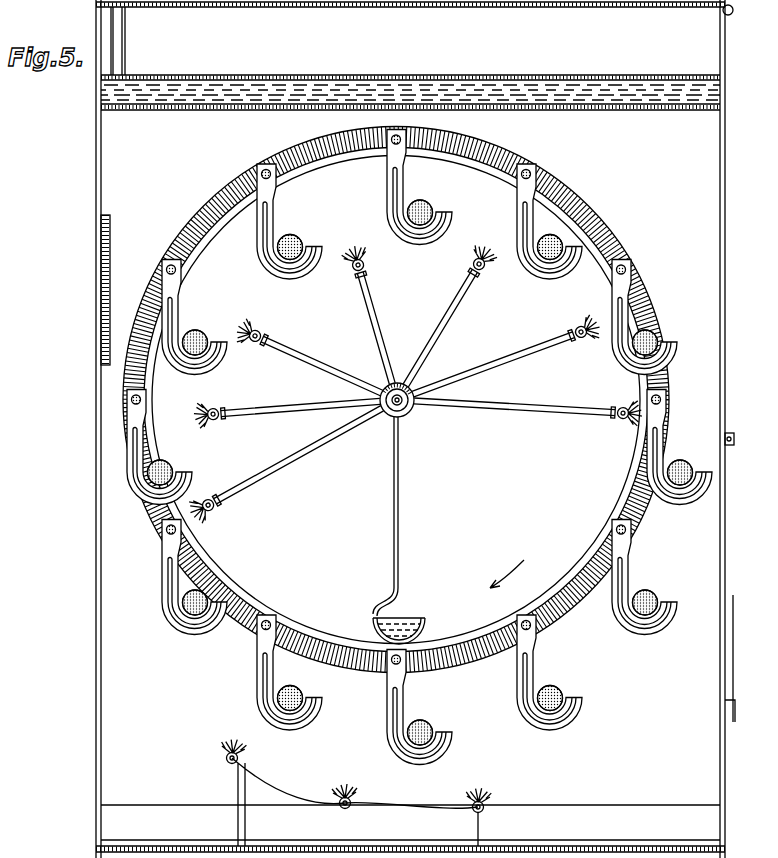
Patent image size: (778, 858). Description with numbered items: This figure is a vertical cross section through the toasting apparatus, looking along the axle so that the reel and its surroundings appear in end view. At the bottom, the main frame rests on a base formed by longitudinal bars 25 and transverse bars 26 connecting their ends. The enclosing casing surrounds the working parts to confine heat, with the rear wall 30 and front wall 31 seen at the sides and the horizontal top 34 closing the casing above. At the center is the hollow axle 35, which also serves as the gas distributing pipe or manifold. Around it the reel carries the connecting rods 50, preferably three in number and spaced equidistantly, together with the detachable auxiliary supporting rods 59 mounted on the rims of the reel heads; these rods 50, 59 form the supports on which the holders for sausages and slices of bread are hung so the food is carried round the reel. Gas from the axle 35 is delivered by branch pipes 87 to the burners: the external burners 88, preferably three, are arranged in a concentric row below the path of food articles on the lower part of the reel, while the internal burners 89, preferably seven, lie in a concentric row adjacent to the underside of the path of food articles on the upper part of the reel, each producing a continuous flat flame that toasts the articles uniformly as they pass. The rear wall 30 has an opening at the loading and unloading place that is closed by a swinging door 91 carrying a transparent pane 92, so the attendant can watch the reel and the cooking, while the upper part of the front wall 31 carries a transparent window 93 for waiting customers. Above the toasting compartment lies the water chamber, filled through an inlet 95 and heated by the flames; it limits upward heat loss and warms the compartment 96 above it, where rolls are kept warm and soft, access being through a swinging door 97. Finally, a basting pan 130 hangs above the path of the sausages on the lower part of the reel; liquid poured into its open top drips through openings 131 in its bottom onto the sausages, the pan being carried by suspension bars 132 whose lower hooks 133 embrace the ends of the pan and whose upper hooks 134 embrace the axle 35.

The longitudinal bars 25 is at (118, 846).
The transverse bars 26 is at (556, 847).
The rear wall 30 is at (726, 790).
The front wall 31 is at (97, 790).
The horizontal top 34 is at (570, 98).
The axle 35 is at (406, 412).
The connecting rods 50 is at (390, 142).
The auxiliary supporting rods 59 is at (520, 178).
The branch pipes 87 is at (520, 358).
The external burners 88 is at (228, 762).
The internal burners 89 is at (352, 272).
The swinging door 91 is at (735, 442).
The transparent pane 92 is at (734, 625).
The transparent window 93 is at (103, 275).
The inlet 95 is at (125, 45).
The warming compartment 96 is at (618, 29).
The swinging door 97 is at (727, 38).
The basting pan 130 is at (419, 624).
The openings 131 is at (372, 620).
The suspension bars 132 is at (399, 500).
The hooks 133 is at (376, 604).
The hooks 134 is at (400, 384).